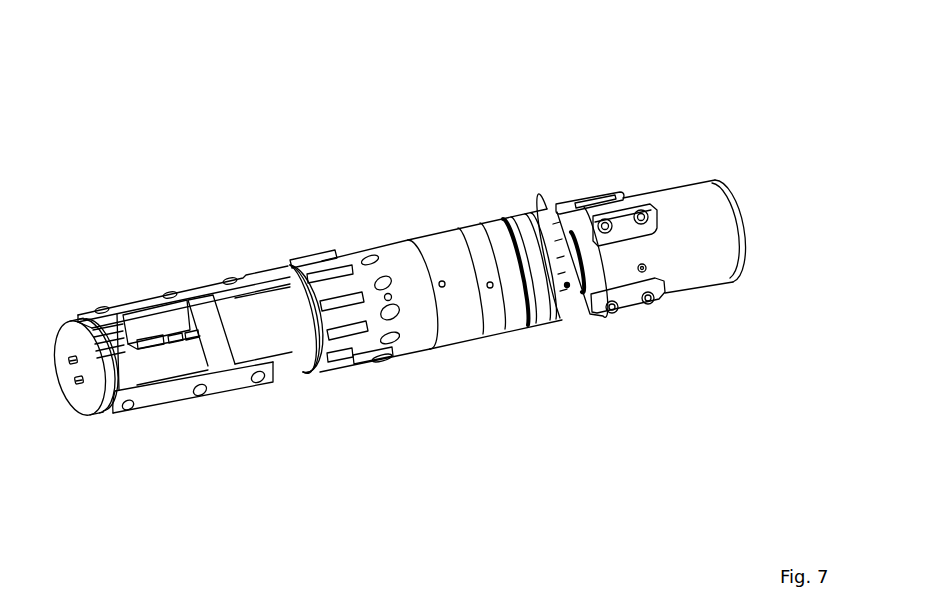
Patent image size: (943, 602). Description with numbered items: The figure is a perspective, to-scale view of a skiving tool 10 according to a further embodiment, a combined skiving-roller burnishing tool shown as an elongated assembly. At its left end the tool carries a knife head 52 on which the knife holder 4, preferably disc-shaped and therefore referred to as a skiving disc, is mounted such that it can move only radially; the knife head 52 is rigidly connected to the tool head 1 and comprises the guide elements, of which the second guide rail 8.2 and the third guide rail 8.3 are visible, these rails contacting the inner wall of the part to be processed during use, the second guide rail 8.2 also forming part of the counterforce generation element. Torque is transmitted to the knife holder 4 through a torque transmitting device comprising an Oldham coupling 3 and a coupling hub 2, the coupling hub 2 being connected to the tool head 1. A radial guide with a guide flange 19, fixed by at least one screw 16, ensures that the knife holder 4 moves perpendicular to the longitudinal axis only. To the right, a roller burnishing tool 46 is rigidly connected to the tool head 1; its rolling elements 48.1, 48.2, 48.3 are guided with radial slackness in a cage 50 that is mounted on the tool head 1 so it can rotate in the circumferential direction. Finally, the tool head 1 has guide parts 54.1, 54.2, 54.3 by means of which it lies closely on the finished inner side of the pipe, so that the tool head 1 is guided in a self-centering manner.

The tool head 1 is at (777, 403).
The coupling hub 2 is at (290, 360).
The Oldham coupling 3 is at (217, 352).
The knife holder 4 is at (167, 323).
The second guide rail 8.2 is at (138, 300).
The third guide rail 8.3 is at (160, 400).
The skiving tool 10 is at (657, 72).
The screw 16 is at (68, 358).
The guide flange 19 is at (127, 373).
The roller burnishing tool 46 is at (293, 222).
The rolling element 48.1 is at (340, 360).
The rolling element 48.2 is at (350, 335).
The rolling element 48.3 is at (357, 303).
The cage 50 is at (413, 345).
The knife head 52 is at (338, 482).
The guide part 54.1 is at (635, 300).
The guide part 54.2 is at (628, 220).
The guide part 54.3 is at (583, 202).